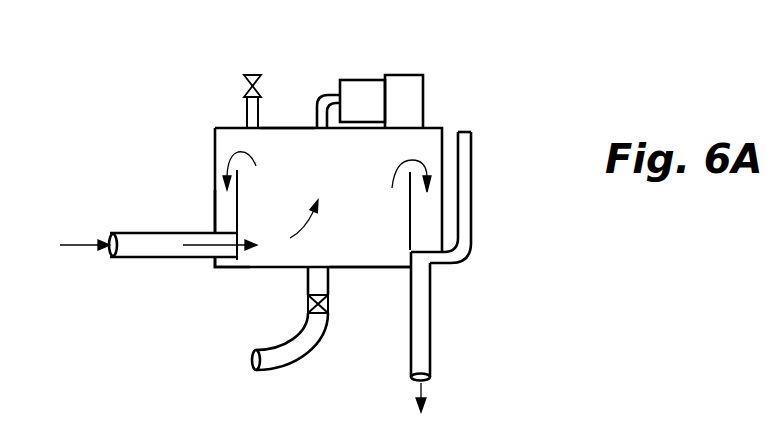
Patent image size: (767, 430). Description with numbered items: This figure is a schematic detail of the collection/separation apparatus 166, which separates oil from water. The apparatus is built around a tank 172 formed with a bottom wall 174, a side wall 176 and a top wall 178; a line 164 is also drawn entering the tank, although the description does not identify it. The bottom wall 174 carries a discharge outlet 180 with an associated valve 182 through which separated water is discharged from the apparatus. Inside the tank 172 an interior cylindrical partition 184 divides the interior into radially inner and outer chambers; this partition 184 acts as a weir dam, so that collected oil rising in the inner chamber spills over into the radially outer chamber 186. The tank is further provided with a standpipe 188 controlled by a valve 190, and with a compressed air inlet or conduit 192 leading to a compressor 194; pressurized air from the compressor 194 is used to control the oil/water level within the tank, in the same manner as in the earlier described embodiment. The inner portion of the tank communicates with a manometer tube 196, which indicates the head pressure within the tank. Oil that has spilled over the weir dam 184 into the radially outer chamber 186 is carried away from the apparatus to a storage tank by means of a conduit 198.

The inlet conduit 164 is at (143, 240).
The collection/separation apparatus 166 is at (486, 68).
The tank 172 is at (240, 274).
The bottom wall 174 is at (360, 270).
The side wall 176 is at (215, 160).
The top wall 178 is at (293, 127).
The discharge outlet 180 is at (308, 358).
The valve 182 is at (308, 305).
The interior cylindrical partition 184 is at (240, 203).
The radially outer chamber 186 is at (217, 208).
The standpipe 188 is at (245, 112).
The valve 190 is at (255, 74).
The compressed air inlet or conduit 192 is at (322, 92).
The compressor 194 is at (372, 85).
The manometer tube 196 is at (472, 183).
The conduit 198 is at (431, 305).